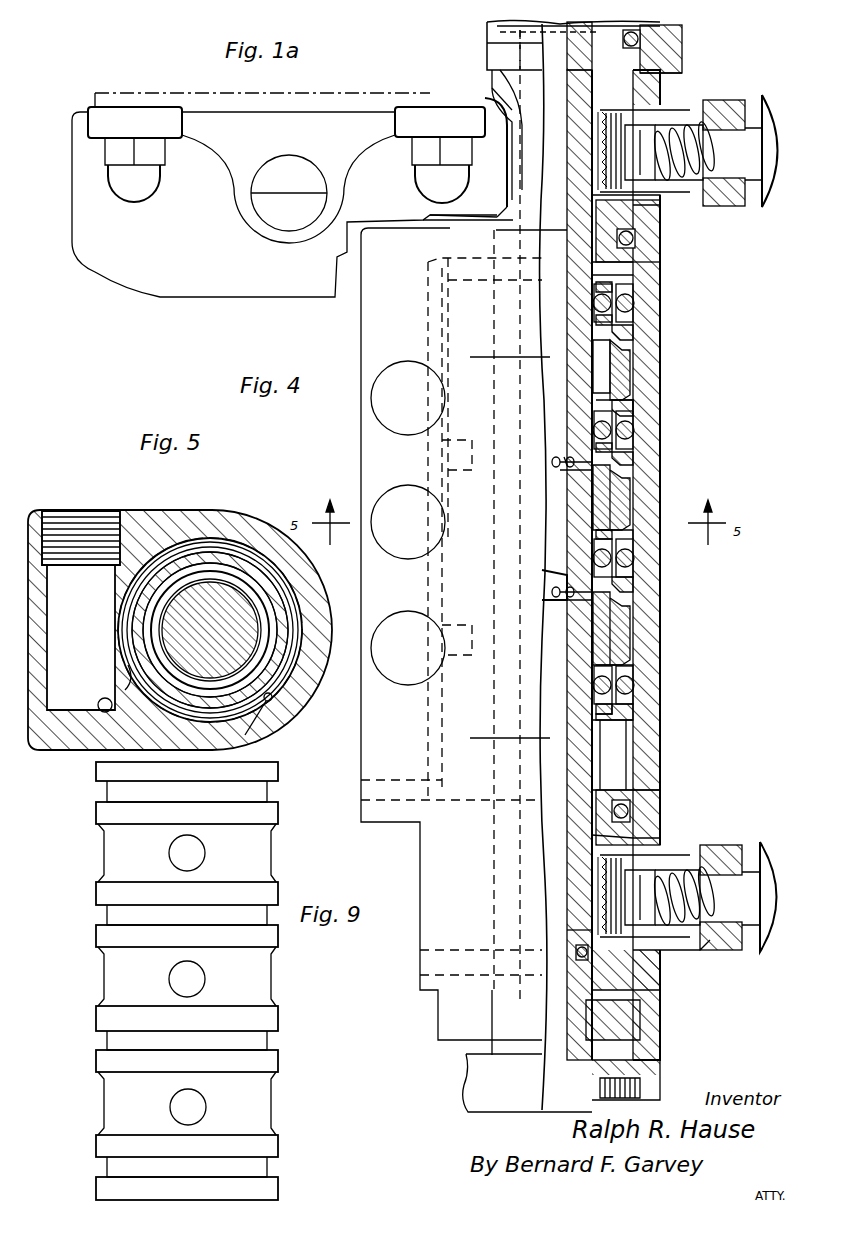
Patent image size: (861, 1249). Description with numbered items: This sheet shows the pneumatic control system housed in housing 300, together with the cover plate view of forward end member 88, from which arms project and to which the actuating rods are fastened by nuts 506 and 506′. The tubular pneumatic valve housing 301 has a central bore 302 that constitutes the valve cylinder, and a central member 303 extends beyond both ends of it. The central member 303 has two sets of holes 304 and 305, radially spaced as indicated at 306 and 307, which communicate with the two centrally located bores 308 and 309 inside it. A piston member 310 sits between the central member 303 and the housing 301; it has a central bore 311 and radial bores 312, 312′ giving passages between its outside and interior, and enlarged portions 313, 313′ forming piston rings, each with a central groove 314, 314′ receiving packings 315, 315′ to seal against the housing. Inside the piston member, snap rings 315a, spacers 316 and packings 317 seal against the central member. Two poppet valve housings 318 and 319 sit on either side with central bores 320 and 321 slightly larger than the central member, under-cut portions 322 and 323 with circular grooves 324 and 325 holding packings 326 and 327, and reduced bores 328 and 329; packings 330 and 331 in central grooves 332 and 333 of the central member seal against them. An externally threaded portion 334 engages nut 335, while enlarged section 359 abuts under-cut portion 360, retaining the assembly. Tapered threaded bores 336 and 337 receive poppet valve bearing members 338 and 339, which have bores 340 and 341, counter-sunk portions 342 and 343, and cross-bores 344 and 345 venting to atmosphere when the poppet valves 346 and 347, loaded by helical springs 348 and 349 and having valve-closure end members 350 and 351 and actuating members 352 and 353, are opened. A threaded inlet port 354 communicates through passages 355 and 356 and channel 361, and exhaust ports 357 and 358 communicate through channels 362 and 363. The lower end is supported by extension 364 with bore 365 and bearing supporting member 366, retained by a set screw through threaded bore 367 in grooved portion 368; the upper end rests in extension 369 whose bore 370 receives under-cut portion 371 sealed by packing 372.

In FIG. 1A, the forward end member 88 is at (245, 288).
In FIG. 1A, the nut 506 is at (418, 152).
In FIG. 1A, the nut 506′ is at (110, 153).
In FIG. 4, the housing for the pneumatic control system 300 is at (708, 640).
In FIG. 5, the housing for the pneumatic control system 300 is at (256, 514).
In FIG. 4, the pneumatic valve housing 301 is at (662, 356).
In FIG. 5, the pneumatic valve housing 301 is at (285, 742).
In FIG. 4, the central bore 302 is at (640, 768).
In FIG. 5, the central bore 302 is at (290, 722).
In FIG. 4, the central member 303 is at (567, 845).
In FIG. 5, the central member 303 is at (248, 628).
In FIG. 4, the set of holes 304 is at (636, 468).
In FIG. 4, the set of holes 305 is at (636, 600).
In FIG. 4, the radial spacing 306 is at (552, 462).
In FIG. 4, the radial spacing 307 is at (542, 595).
In FIG. 4, the centrally located bore 308 is at (560, 354).
In FIG. 4, the centrally located bore 309 is at (560, 733).
In FIG. 4, the piston member 310 is at (636, 460).
In FIG. 5, the piston member 310 is at (140, 633).
In FIG. 9, the piston member 310 is at (96, 890).
In FIG. 4, the central bore 311 is at (636, 400).
In FIG. 5, the central bore 311 is at (225, 560).
In FIG. 4, the radial bore 312 is at (620, 632).
In FIG. 9, the radial bore 312 is at (170, 1106).
In FIG. 4, the radial bore 312′ is at (620, 502).
In FIG. 9, the radial bore 312′ is at (169, 977).
In FIG. 4, the enlarged portion 313 is at (636, 330).
In FIG. 9, the enlarged portion 313 is at (96, 812).
In FIG. 4, the enlarged portion 313′ is at (636, 412).
In FIG. 9, the enlarged portion 313′ is at (96, 934).
In FIG. 4, the central groove 314 is at (636, 300).
In FIG. 9, the central groove 314 is at (280, 795).
In FIG. 4, the central groove 314′ is at (636, 428).
In FIG. 9, the central groove 314′ is at (268, 912).
In FIG. 4, the packing 315 is at (636, 316).
In FIG. 4, the packing 315′ is at (636, 444).
In FIG. 4, the snap ring 315a is at (640, 286).
In FIG. 5, the snap ring 315a is at (172, 555).
In FIG. 4, the spacer 316 is at (596, 292).
In FIG. 5, the spacer 316 is at (255, 605).
In FIG. 4, the packing 317 is at (596, 303).
In FIG. 4, the poppet valve housing 318 is at (650, 240).
In FIG. 4, the poppet valve housing 319 is at (662, 985).
In FIG. 4, the central bore 320 is at (560, 235).
In FIG. 4, the central bore 321 is at (592, 862).
In FIG. 4, the under-cut portion 322 is at (636, 270).
In FIG. 4, the under-cut portion 323 is at (640, 805).
In FIG. 4, the circular groove 324 is at (640, 246).
In FIG. 4, the circular groove 325 is at (645, 842).
In FIG. 4, the packing 326 is at (664, 212).
In FIG. 4, the packing 327 is at (640, 820).
In FIG. 4, the bore of reduced diametric dimension 328 is at (492, 88).
In FIG. 4, the bore of reduced diametric dimension 329 is at (585, 972).
In FIG. 4, the packing 330 is at (487, 66).
In FIG. 4, the packing 331 is at (576, 952).
In FIG. 4, the central groove 332 is at (567, 52).
In FIG. 4, the central groove 333 is at (567, 930).
In FIG. 4, the externally threaded portion 334 is at (650, 1045).
In FIG. 4, the nut 335 is at (438, 1018).
In FIG. 4, the tapered threaded bore 336 is at (507, 128).
In FIG. 4, the tapered threaded bore 337 is at (592, 880).
In FIG. 4, the poppet valve bearing member 338 is at (580, 175).
In FIG. 4, the poppet valve bearing member 339 is at (655, 955).
In FIG. 4, the bore 340 is at (512, 200).
In FIG. 4, the bore 341 is at (660, 970).
In FIG. 4, the counter-sunk portion 342 is at (728, 200).
In FIG. 4, the counter-sunk portion 343 is at (732, 852).
In FIG. 4, the cross-bore 344 is at (708, 105).
In FIG. 4, the cross-bore 345 is at (712, 945).
In FIG. 4, the poppet valve 346 is at (672, 108).
In FIG. 4, the poppet valve 347 is at (680, 853).
In FIG. 4, the helical spring 348 is at (720, 200).
In FIG. 4, the helical spring 349 is at (720, 900).
In FIG. 4, the valve-closure end member 350 is at (665, 73).
In FIG. 4, the valve-closure end member 351 is at (650, 985).
In FIG. 4, the actuating member 352 is at (778, 182).
In FIG. 4, the actuating member 353 is at (775, 935).
In FIG. 4, the threaded inlet port 354 is at (392, 512).
In FIG. 5, the threaded inlet port 354 is at (85, 510).
In FIG. 4, the communicating passage 355 is at (430, 330).
In FIG. 4, the communicating passage 356 is at (430, 728).
In FIG. 5, the communicating passage 356 is at (104, 712).
In FIG. 4, the threaded exhaust port 357 is at (390, 425).
In FIG. 4, the threaded exhaust port 358 is at (388, 680).
In FIG. 5, the threaded exhaust port 358 is at (258, 714).
In FIG. 4, the enlarged section 359 is at (500, 36).
In FIG. 4, the under-cut portion 360 is at (490, 26).
In FIG. 4, the channel 361 is at (462, 538).
In FIG. 4, the channel 362 is at (455, 455).
In FIG. 4, the channel 363 is at (455, 641).
In FIG. 4, the extension 364 is at (660, 1072).
In FIG. 4, the bore 365 is at (592, 1070).
In FIG. 4, the bearing supporting member 366 is at (592, 1080).
In FIG. 4, the threaded bore 367 is at (642, 1088).
In FIG. 4, the grooved portion 368 is at (600, 1090).
In FIG. 4, the extension 369 is at (700, 70).
In FIG. 4, the bore 370 is at (682, 28).
In FIG. 4, the under-cut portion 371 is at (660, 58).
In FIG. 4, the packing 372 is at (640, 42).